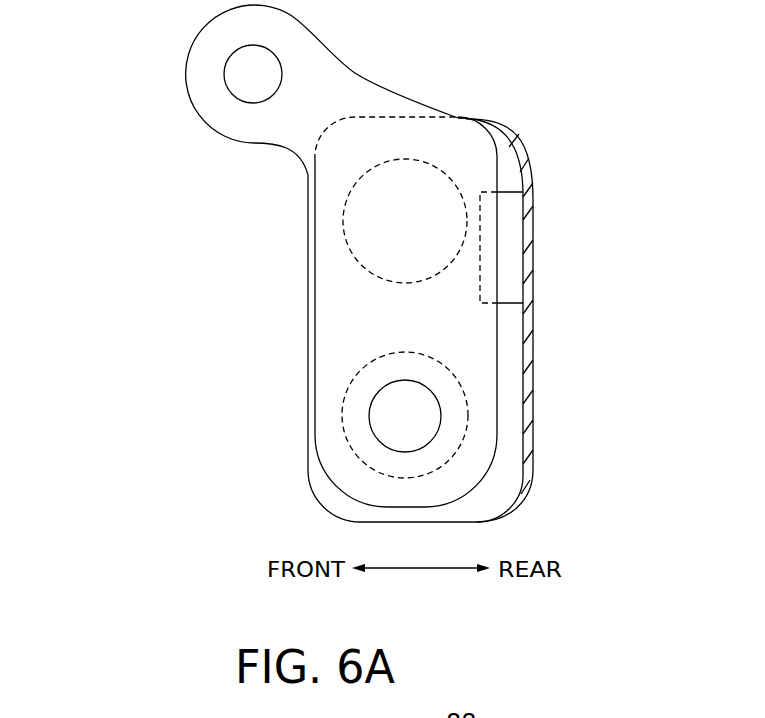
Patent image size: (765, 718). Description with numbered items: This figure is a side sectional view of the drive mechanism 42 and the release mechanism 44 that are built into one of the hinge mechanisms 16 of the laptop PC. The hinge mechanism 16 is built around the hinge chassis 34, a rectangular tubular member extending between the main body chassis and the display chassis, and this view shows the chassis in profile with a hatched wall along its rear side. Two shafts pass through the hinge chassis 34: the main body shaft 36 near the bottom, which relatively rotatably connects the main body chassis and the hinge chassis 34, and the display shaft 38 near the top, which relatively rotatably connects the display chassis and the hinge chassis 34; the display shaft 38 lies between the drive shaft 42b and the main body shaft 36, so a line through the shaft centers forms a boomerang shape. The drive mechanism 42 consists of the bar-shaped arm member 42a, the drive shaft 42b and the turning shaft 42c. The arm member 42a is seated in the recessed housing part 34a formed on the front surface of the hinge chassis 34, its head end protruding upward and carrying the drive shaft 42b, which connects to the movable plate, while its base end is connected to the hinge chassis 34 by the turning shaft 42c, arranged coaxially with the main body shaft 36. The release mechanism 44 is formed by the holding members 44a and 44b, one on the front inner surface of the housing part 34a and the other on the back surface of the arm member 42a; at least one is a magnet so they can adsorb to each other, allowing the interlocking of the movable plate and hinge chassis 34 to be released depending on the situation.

The hinge mechanism 16 is at (533, 116).
The hinge chassis 34 is at (533, 350).
The housing part 34a is at (510, 410).
The main body shaft 36 is at (468, 428).
The display shaft 38 is at (402, 158).
The drive mechanism 42 is at (113, 195).
The arm member 42a is at (350, 318).
The drive shaft 42b is at (250, 82).
The turning shaft 42c is at (393, 418).
The release mechanism 44 is at (623, 195).
The holding member 44a is at (508, 212).
The holding member 44b is at (487, 268).